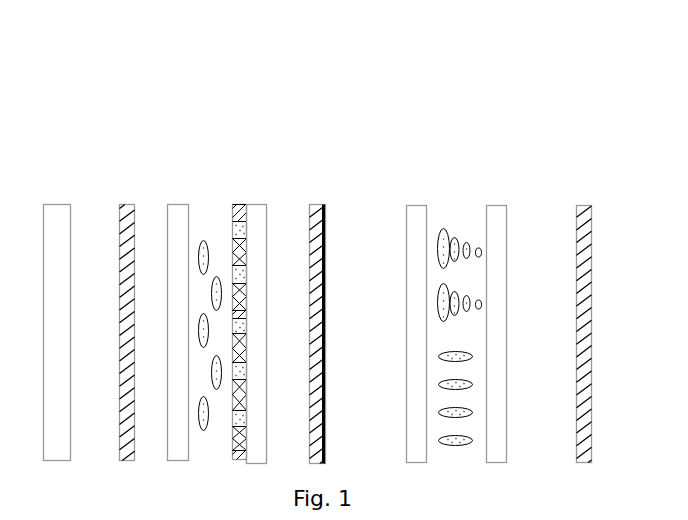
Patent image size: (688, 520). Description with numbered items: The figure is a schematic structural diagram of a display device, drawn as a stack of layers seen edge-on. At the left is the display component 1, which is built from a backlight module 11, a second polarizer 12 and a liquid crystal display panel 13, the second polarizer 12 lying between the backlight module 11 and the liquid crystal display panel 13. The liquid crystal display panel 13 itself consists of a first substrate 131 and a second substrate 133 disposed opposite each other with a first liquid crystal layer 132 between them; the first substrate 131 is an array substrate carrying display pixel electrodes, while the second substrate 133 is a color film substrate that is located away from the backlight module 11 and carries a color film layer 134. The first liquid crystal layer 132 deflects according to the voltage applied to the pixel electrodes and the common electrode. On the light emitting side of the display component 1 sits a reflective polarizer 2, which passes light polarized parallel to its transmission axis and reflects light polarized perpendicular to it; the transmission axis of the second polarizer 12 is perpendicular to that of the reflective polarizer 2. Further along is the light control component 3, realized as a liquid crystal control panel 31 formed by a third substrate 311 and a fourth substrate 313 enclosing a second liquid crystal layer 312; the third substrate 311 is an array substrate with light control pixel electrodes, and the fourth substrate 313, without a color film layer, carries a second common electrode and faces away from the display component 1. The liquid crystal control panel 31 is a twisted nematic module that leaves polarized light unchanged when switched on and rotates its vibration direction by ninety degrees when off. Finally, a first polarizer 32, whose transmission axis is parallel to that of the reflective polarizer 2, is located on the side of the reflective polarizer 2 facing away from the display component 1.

The display component 1 is at (268, 86).
The backlight module 11 is at (57, 215).
The second polarizer 12 is at (127, 215).
The liquid crystal display panel 13 is at (267, 145).
The first substrate 131 is at (173, 215).
The first liquid crystal layer 132 is at (203, 240).
The second substrate 133 is at (259, 217).
The color film layer 134 is at (240, 215).
The reflective polarizer 2 is at (315, 205).
The light control component 3 is at (458, 274).
The liquid crystal control panel 31 is at (522, 152).
The third substrate 311 is at (413, 215).
The second liquid crystal layer 312 is at (453, 237).
The fourth substrate 313 is at (495, 215).
The first polarizer 32 is at (585, 205).